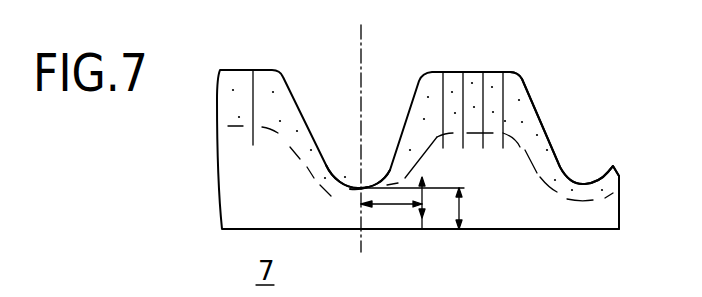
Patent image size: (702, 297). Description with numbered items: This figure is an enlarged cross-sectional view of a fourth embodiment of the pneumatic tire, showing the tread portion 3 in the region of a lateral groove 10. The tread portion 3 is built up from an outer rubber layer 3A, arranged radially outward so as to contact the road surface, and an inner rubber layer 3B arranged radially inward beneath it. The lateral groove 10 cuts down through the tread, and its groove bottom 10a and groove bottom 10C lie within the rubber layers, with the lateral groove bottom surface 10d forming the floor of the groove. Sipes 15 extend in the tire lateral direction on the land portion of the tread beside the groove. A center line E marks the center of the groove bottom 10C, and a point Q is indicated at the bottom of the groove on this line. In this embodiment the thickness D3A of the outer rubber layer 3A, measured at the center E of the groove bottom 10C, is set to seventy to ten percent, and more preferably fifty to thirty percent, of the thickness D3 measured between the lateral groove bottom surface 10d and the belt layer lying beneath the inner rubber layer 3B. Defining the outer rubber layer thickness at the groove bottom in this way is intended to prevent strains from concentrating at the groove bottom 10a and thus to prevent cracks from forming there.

The sipes 15 is at (253, 82).
The lateral groove 10 is at (290, 92).
The groove bottom 10a is at (347, 175).
The lateral groove bottom surface 10d is at (370, 178).
The groove bottom 10C is at (337, 222).
The tread portion 3 is at (470, 72).
The outer rubber layer 3A is at (517, 87).
The inner rubber layer 3B is at (517, 208).
The center of the groove bottom E is at (361, 42).
The groove bottom point Q is at (347, 200).
The thickness of the outer rubber layer D3A is at (423, 192).
The thickness between groove bottom surface and belt layer D3 is at (466, 216).